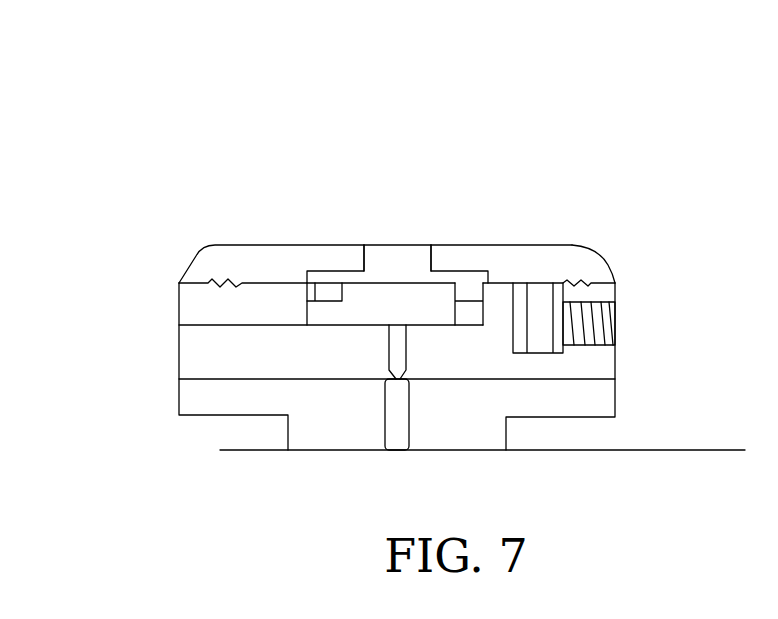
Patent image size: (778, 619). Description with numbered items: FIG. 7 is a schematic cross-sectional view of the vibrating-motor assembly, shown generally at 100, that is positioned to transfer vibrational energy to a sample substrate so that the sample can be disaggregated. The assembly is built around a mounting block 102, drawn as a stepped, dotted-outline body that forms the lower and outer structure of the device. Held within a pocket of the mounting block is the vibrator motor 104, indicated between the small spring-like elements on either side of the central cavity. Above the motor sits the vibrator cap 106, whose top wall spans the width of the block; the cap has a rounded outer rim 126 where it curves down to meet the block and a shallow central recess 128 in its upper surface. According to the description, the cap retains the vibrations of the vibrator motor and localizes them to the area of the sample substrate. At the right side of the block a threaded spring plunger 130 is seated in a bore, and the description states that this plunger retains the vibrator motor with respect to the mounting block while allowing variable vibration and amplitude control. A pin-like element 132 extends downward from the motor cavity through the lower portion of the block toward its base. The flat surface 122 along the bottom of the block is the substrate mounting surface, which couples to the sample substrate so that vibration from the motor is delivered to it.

The valve assembly 100 is at (215, 65).
The housing 102 is at (163, 347).
The valve member 104 is at (357, 303).
The cover 106 is at (428, 222).
The base surface 122 is at (654, 454).
The cap edge 126 is at (584, 257).
The recess 128 is at (376, 249).
The spring retainer 130 is at (541, 322).
The pin 132 is at (377, 356).